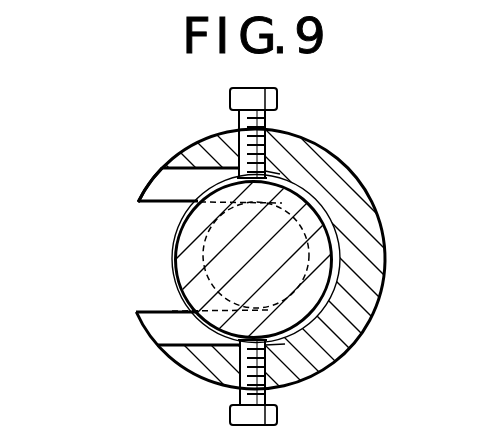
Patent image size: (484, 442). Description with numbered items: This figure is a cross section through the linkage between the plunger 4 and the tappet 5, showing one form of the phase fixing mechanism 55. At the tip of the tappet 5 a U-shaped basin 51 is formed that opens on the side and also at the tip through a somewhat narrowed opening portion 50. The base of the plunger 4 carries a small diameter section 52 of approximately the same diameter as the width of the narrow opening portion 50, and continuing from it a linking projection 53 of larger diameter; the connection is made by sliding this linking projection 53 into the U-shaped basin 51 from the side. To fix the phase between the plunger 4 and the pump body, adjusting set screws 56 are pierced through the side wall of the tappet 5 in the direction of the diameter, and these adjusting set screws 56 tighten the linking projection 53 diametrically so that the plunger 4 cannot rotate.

The plunger 4 is at (266, 259).
The tappet 5 is at (370, 317).
The opening portion 50 is at (153, 203).
The U-shaped basin 51 is at (173, 168).
The small diameter section 52 is at (212, 280).
The linking projection 53 is at (318, 216).
The phase fixing mechanism 55 is at (118, 191).
The adjusting set screws 56 is at (277, 96).